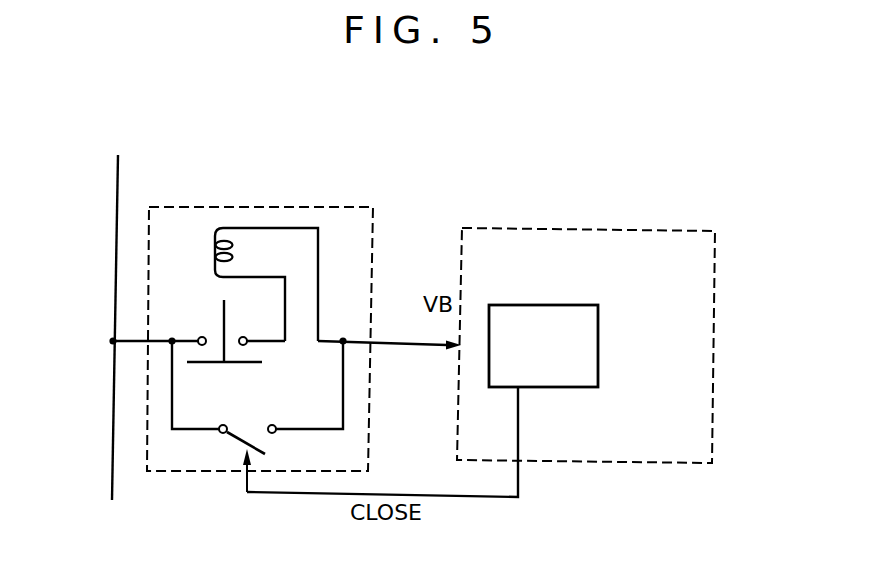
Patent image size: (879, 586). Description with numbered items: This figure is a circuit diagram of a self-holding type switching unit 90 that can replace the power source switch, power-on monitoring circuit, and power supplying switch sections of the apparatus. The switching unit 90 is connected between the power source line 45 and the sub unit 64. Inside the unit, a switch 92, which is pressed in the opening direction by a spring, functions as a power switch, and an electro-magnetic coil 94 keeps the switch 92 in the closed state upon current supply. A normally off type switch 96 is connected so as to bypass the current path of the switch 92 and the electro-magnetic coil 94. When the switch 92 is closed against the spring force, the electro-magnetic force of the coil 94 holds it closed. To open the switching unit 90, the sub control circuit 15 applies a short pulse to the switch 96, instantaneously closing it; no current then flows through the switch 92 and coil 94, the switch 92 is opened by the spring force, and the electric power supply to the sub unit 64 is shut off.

The power source line 45 is at (113, 289).
The self-holding type switching unit 90 is at (322, 207).
The electro-magnetic coil 94 is at (212, 255).
The switch 92 is at (237, 362).
The normally off type switch 96 is at (236, 438).
The sub unit 64 is at (715, 325).
The sub control circuit 15 is at (598, 318).